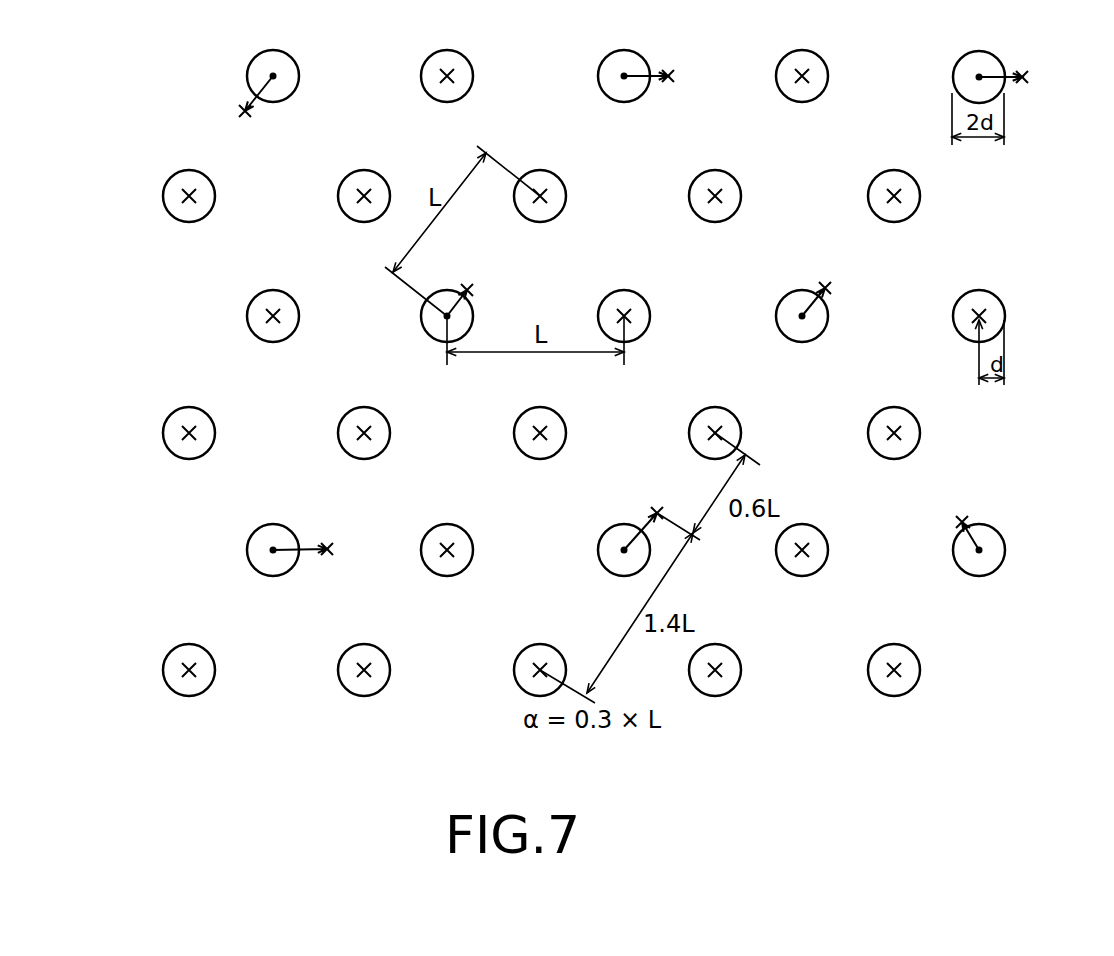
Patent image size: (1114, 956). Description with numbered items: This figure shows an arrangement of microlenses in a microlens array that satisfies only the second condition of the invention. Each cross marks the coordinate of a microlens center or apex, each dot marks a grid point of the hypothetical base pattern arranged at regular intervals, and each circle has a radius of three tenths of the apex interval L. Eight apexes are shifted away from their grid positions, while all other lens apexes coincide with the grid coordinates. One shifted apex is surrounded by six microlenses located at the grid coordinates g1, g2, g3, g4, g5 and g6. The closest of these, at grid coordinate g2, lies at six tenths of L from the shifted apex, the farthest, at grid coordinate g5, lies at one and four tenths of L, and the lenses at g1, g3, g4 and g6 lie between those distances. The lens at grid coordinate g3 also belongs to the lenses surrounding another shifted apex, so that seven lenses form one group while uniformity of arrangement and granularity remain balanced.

The grid coordinate g1 is at (540, 433).
The grid coordinate g2 is at (715, 433).
The grid coordinate g3 is at (805, 552).
The grid coordinate g4 is at (715, 670).
The grid coordinate g5 is at (540, 670).
The grid coordinate g6 is at (447, 550).